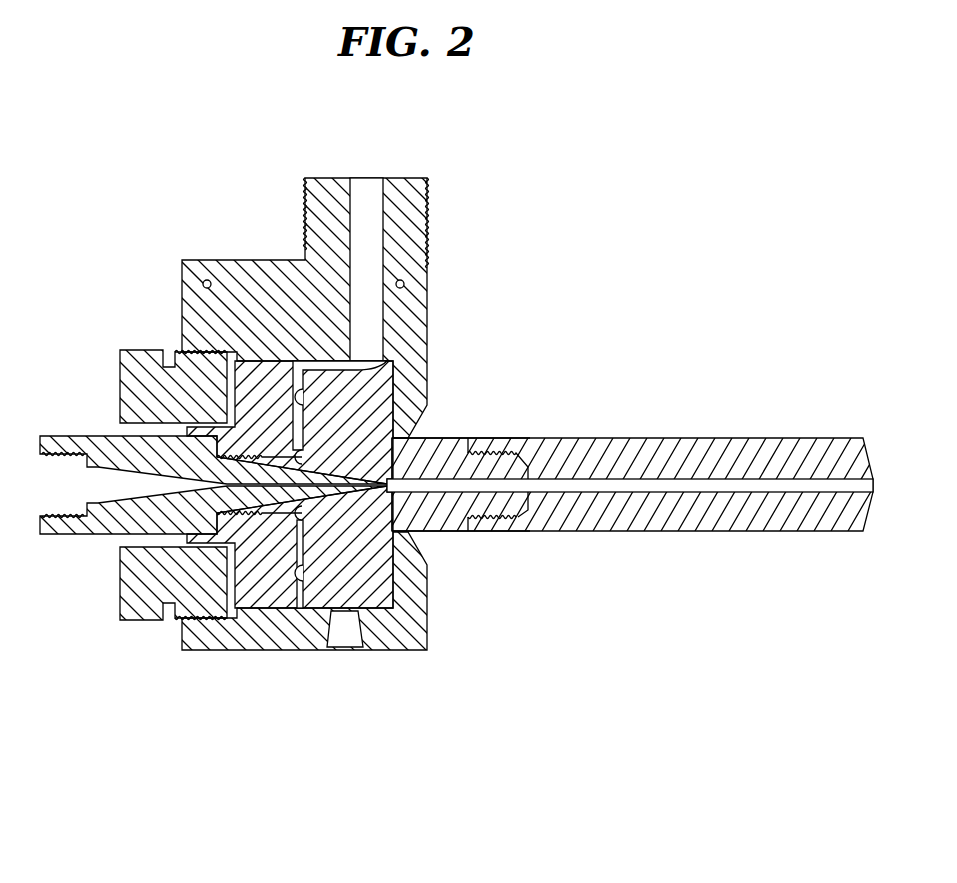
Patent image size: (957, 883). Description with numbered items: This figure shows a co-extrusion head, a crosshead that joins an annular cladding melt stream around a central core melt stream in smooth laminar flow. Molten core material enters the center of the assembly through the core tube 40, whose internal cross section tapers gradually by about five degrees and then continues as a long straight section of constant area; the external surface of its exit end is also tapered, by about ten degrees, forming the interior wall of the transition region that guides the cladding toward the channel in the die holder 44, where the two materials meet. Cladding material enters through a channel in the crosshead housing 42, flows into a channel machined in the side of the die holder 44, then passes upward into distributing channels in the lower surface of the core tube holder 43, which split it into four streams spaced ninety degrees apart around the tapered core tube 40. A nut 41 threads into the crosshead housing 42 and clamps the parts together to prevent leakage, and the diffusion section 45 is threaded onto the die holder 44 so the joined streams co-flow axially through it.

The core tube 40 is at (92, 434).
The nut 41 is at (145, 352).
The crosshead housing 42 is at (233, 260).
The core tube holder 43 is at (272, 608).
The die holder 44 is at (447, 531).
The diffusion section 45 is at (758, 531).